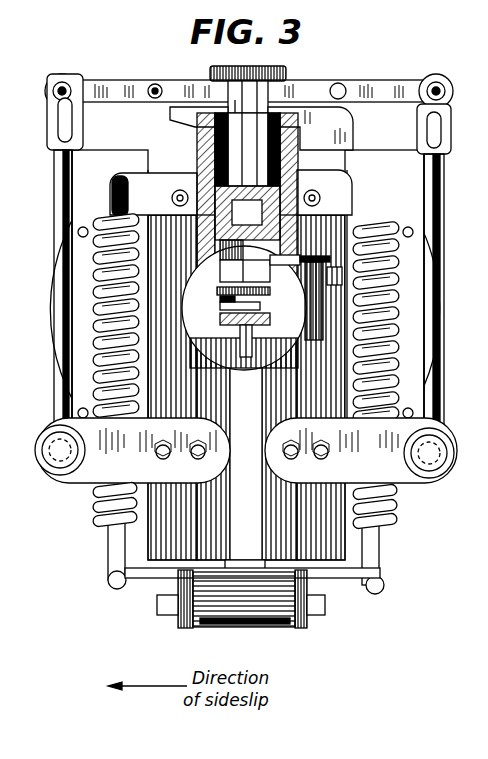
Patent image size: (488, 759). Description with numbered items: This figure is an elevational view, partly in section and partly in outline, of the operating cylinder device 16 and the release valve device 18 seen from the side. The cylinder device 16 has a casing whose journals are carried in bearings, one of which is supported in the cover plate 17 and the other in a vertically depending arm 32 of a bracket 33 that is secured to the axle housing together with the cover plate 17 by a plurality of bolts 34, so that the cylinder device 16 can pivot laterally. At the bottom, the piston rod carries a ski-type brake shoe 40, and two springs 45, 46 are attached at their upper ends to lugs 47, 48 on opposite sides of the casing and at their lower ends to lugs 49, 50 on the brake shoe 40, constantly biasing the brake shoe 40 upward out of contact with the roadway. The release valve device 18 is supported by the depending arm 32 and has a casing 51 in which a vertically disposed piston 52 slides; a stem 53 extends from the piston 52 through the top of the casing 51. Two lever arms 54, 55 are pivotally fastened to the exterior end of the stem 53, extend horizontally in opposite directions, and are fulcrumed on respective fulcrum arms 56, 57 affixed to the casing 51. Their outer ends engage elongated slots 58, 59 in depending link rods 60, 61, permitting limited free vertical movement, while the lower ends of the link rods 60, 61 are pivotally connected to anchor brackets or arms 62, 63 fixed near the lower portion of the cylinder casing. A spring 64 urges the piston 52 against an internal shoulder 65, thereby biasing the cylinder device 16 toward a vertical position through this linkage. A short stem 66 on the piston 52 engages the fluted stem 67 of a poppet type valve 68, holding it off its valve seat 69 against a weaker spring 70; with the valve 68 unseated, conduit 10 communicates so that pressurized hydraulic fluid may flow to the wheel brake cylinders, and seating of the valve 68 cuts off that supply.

The conduit 10 is at (261, 353).
The operating cylinder device 16 is at (140, 543).
The cover plate 17 is at (80, 338).
The release valve device 18 is at (217, 110).
The depending arm 32 is at (100, 200).
The bracket 33 is at (213, 115).
The bolts 34 is at (78, 237).
The ski-type brake shoe 40 is at (230, 620).
The spring 45 is at (100, 287).
The spring 46 is at (401, 268).
The lug 47 is at (137, 177).
The lug 48 is at (351, 177).
The lug 49 is at (132, 580).
The lug 50 is at (372, 588).
The casing 51 is at (203, 162).
The piston 52 is at (203, 223).
The stem 53 is at (271, 110).
The lever arm 54 is at (90, 82).
The lever arm 55 is at (399, 85).
The fulcrum arm 56 is at (152, 110).
The fulcrum arm 57 is at (357, 113).
The elongated slot 58 is at (62, 127).
The elongated slot 59 is at (437, 122).
The link rod 60 is at (65, 162).
The link rod 61 is at (444, 167).
The anchor bracket or arm 62 is at (90, 472).
The anchor bracket or arm 63 is at (404, 475).
The spring 64 is at (297, 175).
The shoulder 65 is at (200, 247).
The stem 66 is at (227, 273).
The fluted stem 67 is at (227, 281).
The poppet type valve 68 is at (227, 300).
The valve seat 69 is at (227, 292).
The spring 70 is at (207, 340).